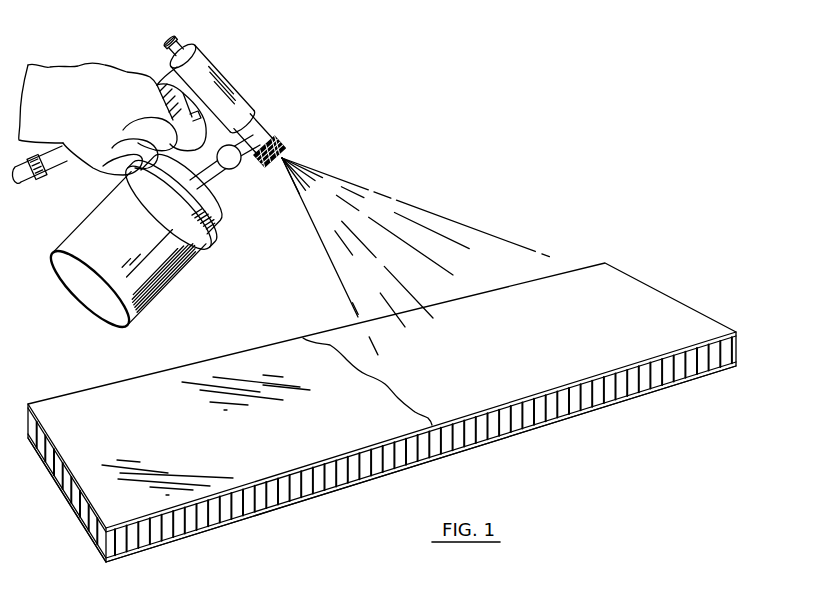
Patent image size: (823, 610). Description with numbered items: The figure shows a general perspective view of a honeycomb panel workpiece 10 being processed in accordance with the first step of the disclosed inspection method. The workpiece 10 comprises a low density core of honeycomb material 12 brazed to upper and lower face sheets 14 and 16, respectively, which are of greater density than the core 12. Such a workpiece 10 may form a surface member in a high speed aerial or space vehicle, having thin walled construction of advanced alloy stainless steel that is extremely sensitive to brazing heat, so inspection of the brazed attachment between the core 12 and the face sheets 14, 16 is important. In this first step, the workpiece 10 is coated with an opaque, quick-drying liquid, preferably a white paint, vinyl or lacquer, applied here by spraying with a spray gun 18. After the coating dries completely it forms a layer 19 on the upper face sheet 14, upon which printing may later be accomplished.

The workpiece 10 is at (553, 272).
The honeycomb core 12 is at (599, 399).
The upper face sheet 14 is at (165, 387).
The lower face sheet 16 is at (217, 527).
The spray gun 18 is at (215, 74).
The layer 19 is at (438, 373).